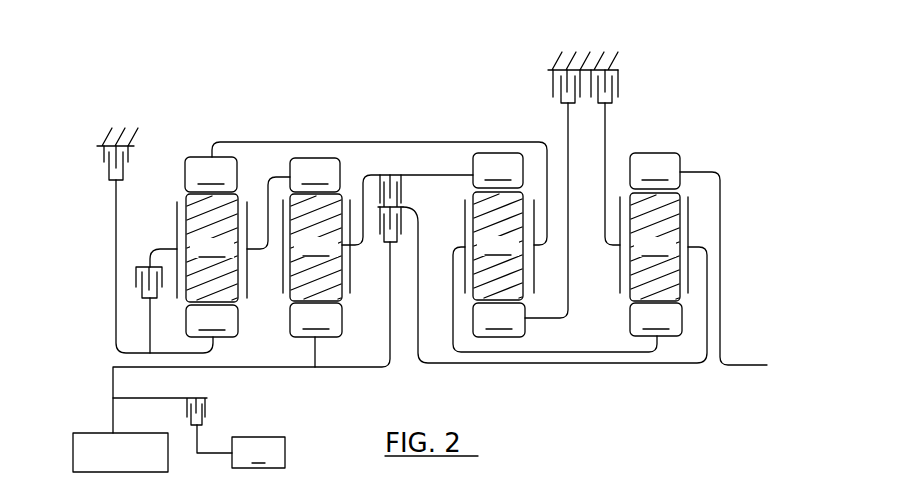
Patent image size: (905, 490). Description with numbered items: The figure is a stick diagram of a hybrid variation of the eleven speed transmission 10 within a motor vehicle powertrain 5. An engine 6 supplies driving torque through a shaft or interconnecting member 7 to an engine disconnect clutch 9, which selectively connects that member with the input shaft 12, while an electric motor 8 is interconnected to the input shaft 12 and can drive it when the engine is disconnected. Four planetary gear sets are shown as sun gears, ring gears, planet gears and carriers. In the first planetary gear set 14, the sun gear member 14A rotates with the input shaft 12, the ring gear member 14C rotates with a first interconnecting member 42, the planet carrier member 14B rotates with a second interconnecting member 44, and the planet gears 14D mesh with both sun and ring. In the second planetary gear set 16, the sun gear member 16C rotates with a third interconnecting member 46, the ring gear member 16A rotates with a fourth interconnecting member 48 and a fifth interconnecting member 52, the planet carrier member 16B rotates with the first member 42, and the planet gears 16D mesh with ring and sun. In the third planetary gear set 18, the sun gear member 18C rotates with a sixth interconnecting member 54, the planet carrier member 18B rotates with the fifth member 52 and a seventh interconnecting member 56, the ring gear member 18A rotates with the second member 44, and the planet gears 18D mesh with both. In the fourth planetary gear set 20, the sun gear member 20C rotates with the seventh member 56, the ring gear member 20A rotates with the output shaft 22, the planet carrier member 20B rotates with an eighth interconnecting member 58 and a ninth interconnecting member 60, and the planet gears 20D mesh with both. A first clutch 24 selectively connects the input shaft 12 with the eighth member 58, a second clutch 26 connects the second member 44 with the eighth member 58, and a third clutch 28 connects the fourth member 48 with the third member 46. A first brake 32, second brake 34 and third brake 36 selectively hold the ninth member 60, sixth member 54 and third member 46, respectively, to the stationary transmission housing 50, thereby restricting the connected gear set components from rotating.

The powertrain 5 is at (643, 41).
The transmission 10 is at (688, 79).
The transmission housing 50 is at (132, 140).
The third brake 36 is at (104, 166).
The third shaft or interconnecting member 46 is at (170, 352).
The fourth shaft or interconnecting member 48 is at (168, 248).
The third clutch 28 is at (136, 279).
The second planetary gear set 16 is at (232, 214).
The ring gear member 16A is at (211, 174).
The planet gear carrier member 16B is at (248, 290).
The sun gear member 16C is at (212, 321).
The planet gears 16D is at (212, 248).
The fifth shaft or interconnecting member 52 is at (377, 142).
The first shaft or interconnecting member 42 is at (268, 205).
The first planetary gear set 14 is at (335, 228).
The sun gear member 14A is at (316, 335).
The planet gear carrier member 14B is at (350, 283).
The ring gear member 14C is at (315, 175).
The planet gears 14D is at (316, 247).
The second shaft or interconnecting member 44 is at (362, 190).
The second clutch 26 is at (404, 187).
The first clutch 24 is at (381, 233).
The input shaft 12 is at (352, 368).
The eighth shaft or interconnecting member 58 is at (418, 348).
The third planetary gear set 18 is at (541, 213).
The ring gear member 18A is at (498, 170).
The planet gear carrier member 18B is at (535, 283).
The sun gear member 18C is at (499, 320).
The planet gears 18D is at (498, 246).
The seventh shaft or interconnecting member 56 is at (560, 353).
The second brake 34 is at (555, 86).
The first brake 32 is at (619, 85).
The sixth shaft or interconnecting member 54 is at (567, 128).
The ninth shaft or interconnecting member 60 is at (606, 128).
The fourth planetary gear set 20 is at (671, 222).
The ring gear member 20A is at (655, 171).
The planet gear carrier member 20B is at (690, 220).
The sun gear member 20C is at (656, 319).
The planet gears 20D is at (655, 247).
The output shaft 22 is at (700, 171).
The electric motor 8 is at (95, 433).
The engine disconnect clutch 9 is at (208, 405).
The shaft or interconnecting member 7 is at (217, 452).
The engine 6 is at (258, 452).